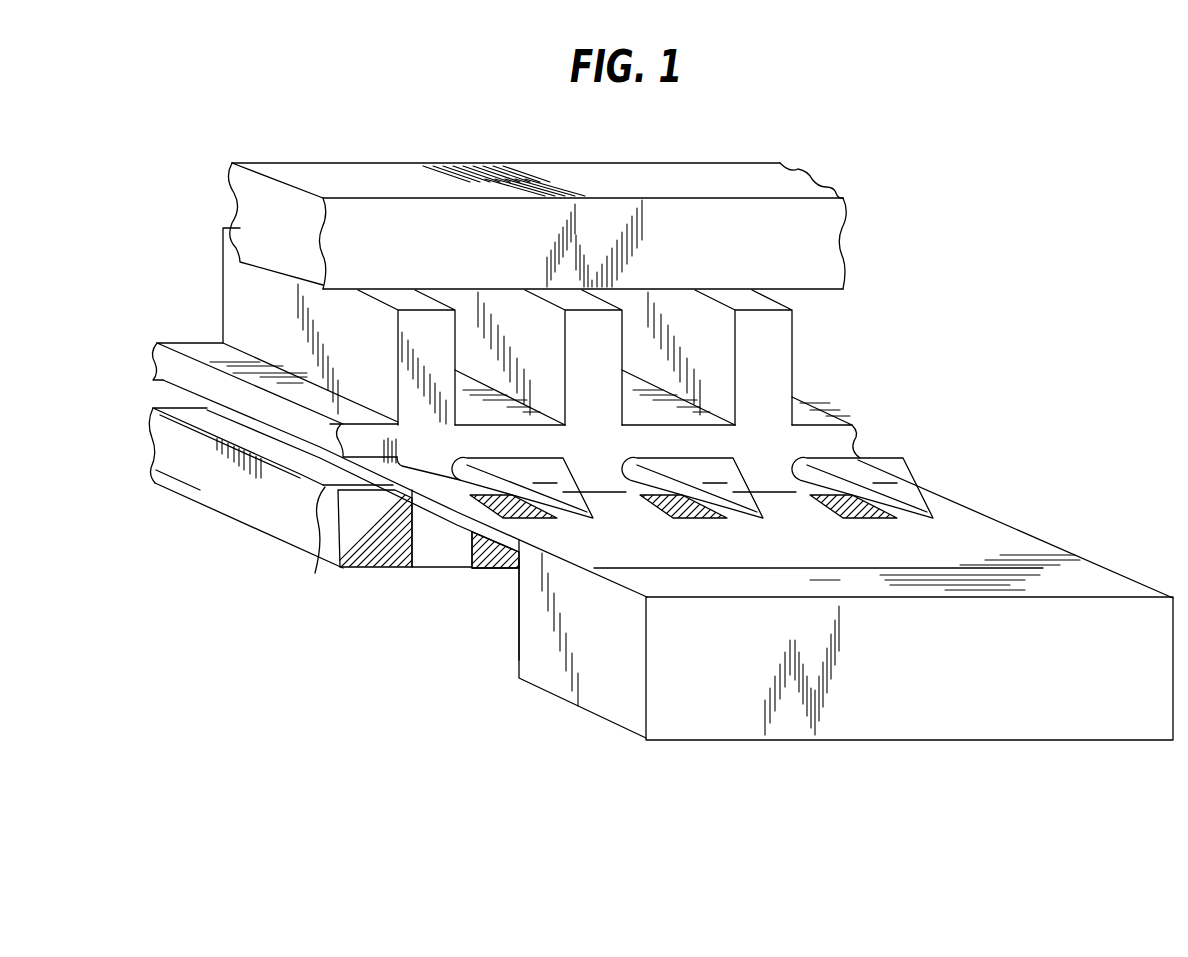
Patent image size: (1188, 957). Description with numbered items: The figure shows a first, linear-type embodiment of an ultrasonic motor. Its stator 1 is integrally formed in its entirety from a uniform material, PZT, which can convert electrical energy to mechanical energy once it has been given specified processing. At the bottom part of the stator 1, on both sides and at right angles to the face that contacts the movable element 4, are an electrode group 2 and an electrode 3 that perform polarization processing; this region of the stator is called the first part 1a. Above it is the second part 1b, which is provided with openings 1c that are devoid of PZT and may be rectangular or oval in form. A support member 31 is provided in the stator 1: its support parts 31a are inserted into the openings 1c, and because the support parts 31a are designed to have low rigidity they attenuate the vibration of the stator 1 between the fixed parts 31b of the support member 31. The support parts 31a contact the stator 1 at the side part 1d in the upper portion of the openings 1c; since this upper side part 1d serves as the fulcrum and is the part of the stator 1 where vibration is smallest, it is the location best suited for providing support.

The stator 1 is at (232, 504).
The first part 1a is at (140, 402).
The second part 1b is at (140, 228).
The openings 1c is at (455, 524).
The side part 1d is at (815, 443).
The electrode group 2 is at (330, 545).
The electrode 3 is at (151, 482).
The movable element 4 is at (371, 178).
The support member 31 is at (690, 710).
The support parts 31a is at (987, 530).
The fixed parts 31b is at (618, 697).